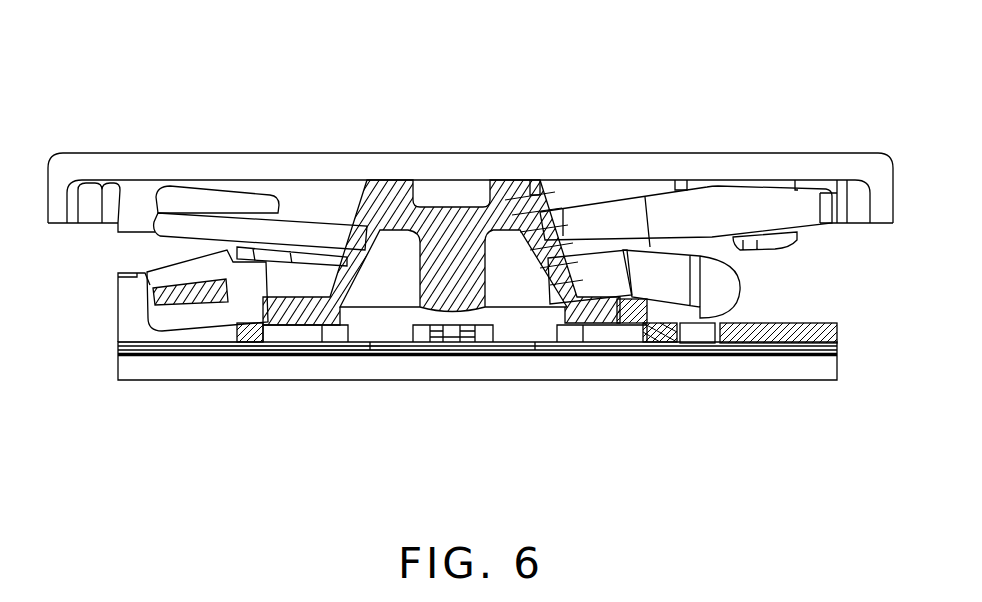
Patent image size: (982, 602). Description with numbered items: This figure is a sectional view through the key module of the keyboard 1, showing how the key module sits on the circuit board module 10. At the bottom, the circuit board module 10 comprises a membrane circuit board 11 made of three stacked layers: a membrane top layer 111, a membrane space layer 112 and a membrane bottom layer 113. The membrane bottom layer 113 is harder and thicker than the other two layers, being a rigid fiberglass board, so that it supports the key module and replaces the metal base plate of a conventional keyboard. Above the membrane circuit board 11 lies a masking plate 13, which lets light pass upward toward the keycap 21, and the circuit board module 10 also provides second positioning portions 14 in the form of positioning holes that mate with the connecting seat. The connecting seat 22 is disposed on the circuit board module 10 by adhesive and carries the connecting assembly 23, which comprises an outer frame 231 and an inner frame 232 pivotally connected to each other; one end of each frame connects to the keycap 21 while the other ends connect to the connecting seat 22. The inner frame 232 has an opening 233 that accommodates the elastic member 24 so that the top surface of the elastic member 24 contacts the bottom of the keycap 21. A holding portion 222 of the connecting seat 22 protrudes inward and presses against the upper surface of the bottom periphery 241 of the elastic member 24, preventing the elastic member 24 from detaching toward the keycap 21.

The keyboard 1 is at (135, 53).
The circuit board module 10 is at (118, 367).
The membrane circuit board 11 is at (365, 443).
The membrane top layer 111 is at (348, 353).
The membrane space layer 112 is at (297, 358).
The membrane bottom layer 113 is at (228, 372).
The masking plate 13 is at (827, 349).
The second positioning portions 14 is at (832, 340).
The keycap 21 is at (112, 160).
The connecting seat 22 is at (128, 312).
The holding portion 222 is at (618, 320).
The connecting assembly 23 is at (195, 265).
The outer frame 231 is at (743, 240).
The inner frame 232 is at (718, 287).
The opening 233 is at (590, 262).
The elastic member 24 is at (453, 247).
The bottom periphery 241 is at (663, 335).